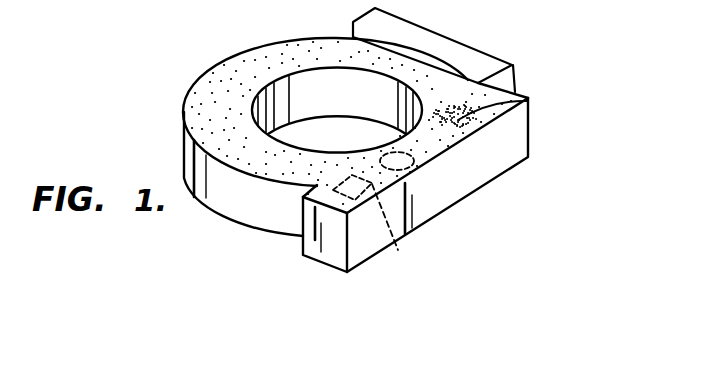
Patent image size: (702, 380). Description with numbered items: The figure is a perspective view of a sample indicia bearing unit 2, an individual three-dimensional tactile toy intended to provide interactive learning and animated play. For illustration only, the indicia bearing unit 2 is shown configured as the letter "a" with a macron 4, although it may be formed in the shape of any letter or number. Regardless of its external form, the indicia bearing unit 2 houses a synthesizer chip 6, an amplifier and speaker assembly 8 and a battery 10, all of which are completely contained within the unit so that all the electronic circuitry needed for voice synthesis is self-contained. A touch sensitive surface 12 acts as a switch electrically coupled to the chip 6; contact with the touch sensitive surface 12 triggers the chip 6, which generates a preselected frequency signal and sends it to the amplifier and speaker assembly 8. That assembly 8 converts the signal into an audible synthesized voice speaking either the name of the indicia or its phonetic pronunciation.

The indicia bearing unit 2 is at (489, 35).
The macron 4 is at (503, 63).
The synthesizer chip 6 is at (400, 252).
The amplifier and speaker assembly 8 is at (528, 115).
The battery 10 is at (413, 162).
The touch sensitive surface 12 is at (230, 88).